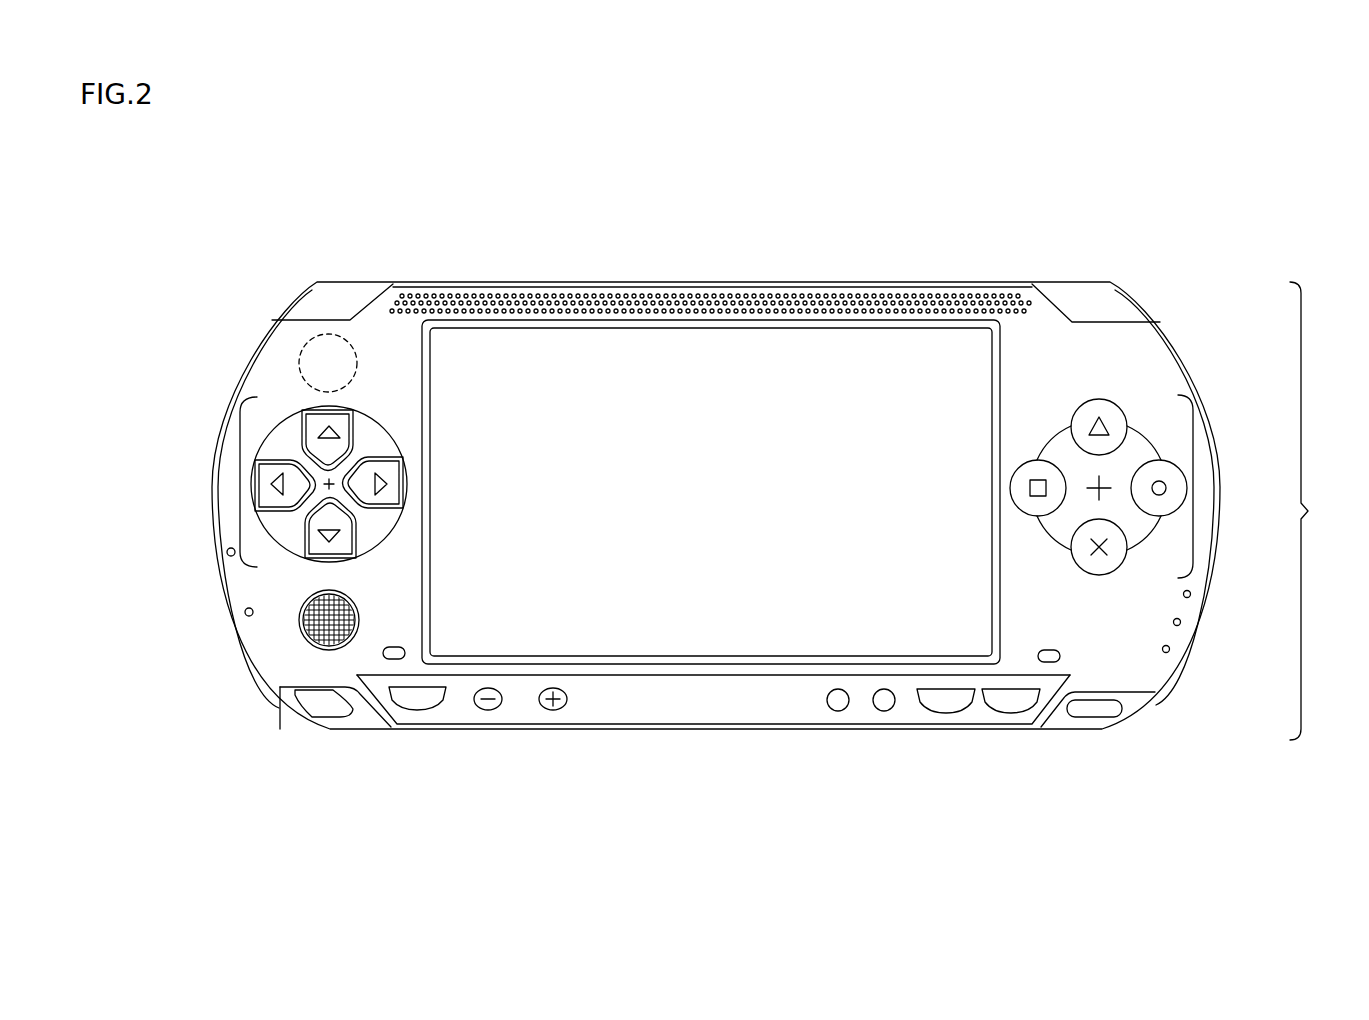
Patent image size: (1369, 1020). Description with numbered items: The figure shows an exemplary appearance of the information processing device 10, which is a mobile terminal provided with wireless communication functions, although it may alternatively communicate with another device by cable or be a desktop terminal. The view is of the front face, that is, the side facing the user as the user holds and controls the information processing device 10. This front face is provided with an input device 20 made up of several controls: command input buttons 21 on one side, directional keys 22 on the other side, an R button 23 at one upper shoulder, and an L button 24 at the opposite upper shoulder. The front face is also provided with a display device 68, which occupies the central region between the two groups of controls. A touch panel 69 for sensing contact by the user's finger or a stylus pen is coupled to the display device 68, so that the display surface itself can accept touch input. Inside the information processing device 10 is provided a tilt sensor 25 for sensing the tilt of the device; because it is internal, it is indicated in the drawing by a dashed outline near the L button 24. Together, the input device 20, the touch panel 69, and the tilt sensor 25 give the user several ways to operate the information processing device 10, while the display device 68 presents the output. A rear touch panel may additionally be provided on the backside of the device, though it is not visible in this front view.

The information processing device 10 is at (729, 832).
The input device 20 is at (1315, 511).
The command input buttons 21 is at (1197, 493).
The directional keys 22 is at (240, 486).
The R button 23 is at (1135, 303).
The L button 24 is at (297, 307).
The tilt sensor 25 is at (300, 363).
The display device 68 is at (851, 344).
The touch panel 69 is at (711, 492).